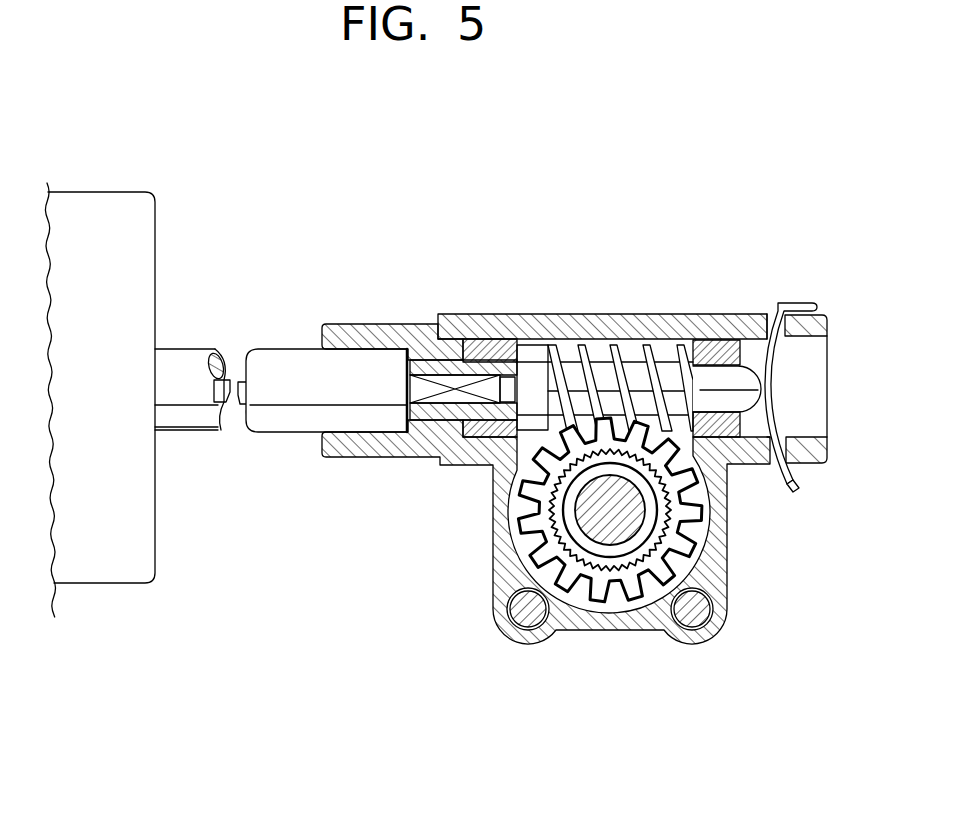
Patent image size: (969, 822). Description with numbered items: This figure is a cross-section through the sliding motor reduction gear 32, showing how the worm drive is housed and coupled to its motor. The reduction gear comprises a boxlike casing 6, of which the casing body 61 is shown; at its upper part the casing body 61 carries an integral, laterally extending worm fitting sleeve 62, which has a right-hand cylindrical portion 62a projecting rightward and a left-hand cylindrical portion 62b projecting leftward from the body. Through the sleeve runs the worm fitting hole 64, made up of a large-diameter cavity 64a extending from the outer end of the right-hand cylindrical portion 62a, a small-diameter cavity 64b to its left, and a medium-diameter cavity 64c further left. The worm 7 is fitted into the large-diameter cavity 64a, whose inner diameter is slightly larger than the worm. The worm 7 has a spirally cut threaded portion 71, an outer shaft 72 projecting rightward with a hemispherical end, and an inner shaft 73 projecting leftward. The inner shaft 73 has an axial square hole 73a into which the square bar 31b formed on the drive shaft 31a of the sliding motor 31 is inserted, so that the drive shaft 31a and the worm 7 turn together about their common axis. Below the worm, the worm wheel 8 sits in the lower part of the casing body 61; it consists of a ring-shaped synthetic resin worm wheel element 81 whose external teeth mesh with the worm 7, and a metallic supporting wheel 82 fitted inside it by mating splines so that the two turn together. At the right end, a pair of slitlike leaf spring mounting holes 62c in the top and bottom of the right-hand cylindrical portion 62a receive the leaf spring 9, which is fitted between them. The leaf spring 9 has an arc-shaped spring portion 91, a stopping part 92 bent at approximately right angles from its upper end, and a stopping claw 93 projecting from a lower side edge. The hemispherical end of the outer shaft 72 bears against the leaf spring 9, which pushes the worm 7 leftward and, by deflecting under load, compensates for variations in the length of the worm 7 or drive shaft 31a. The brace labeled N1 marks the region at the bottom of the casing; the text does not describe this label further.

The sliding motor 31 is at (108, 213).
The drive shaft 31a is at (233, 380).
The square bar 31b is at (420, 436).
The sliding motor reduction gear 32 is at (693, 308).
The casing 6 is at (576, 567).
The casing body 61 is at (500, 583).
The worm fitting sleeve 62 is at (559, 411).
The right-hand cylindrical portion 62a is at (752, 462).
The left-hand cylindrical portion 62b is at (345, 458).
The leaf spring mounting holes 62c is at (773, 313).
The worm fitting hole 64 is at (544, 320).
The large-diameter cavity 64a is at (620, 335).
The small-diameter cavity 64b is at (482, 348).
The medium-diameter cavity 64c is at (370, 327).
The worm 7 is at (605, 317).
The threaded portion 71 is at (637, 350).
The outer shaft 72 is at (740, 437).
The inner shaft 73 is at (462, 454).
The square hole 73a is at (483, 440).
The worm wheel 8 is at (522, 523).
The worm wheel element 81 is at (523, 600).
The supporting wheel 82 is at (658, 530).
The leaf spring 9 is at (818, 337).
The spring portion 91 is at (768, 388).
The stopping part 92 is at (800, 303).
The stopping claw 93 is at (802, 480).
The fastening portion N1 is at (667, 627).